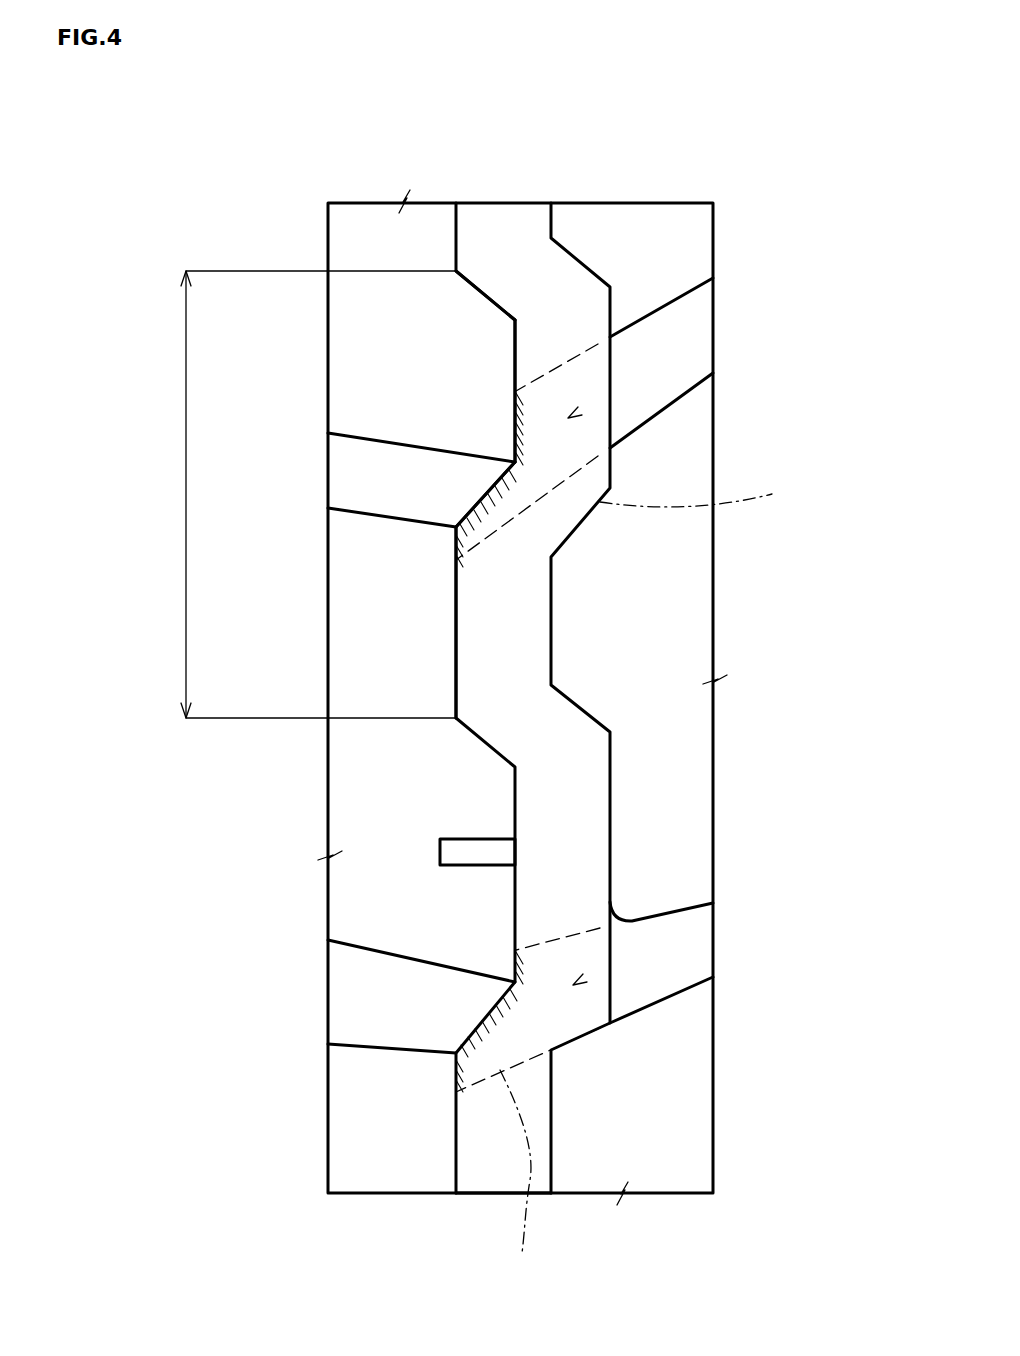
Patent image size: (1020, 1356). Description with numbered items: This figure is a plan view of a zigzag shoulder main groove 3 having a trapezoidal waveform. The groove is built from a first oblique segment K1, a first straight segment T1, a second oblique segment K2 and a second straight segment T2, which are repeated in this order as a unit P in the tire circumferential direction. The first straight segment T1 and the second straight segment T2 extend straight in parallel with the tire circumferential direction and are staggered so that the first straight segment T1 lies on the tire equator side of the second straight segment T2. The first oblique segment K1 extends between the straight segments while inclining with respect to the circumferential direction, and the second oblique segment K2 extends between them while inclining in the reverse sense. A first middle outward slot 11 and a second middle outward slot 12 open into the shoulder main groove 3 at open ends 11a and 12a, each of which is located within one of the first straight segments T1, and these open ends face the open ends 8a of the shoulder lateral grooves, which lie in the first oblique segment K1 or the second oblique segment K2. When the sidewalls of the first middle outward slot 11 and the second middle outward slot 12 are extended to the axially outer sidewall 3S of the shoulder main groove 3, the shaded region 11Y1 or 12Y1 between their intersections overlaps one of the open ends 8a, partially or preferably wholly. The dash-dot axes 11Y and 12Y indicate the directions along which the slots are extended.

The shoulder main groove 3 is at (513, 238).
The axially outer sidewall of the shoulder main groove 3S is at (470, 1160).
The open end of the shoulder lateral groove 8a is at (468, 510).
The first middle outward slot 11 is at (660, 913).
The open end of the first middle outward slot 11a is at (605, 1005).
The axis of first wiring 11Y is at (524, 1176).
The region between intersections of the first middle outward slot sidewalls 11Y1 is at (573, 985).
The second middle outward slot 12 is at (678, 293).
The open end of the second middle outward slot 12a is at (597, 345).
The axis of second wiring 12Y is at (711, 494).
The region between intersections of the second middle outward slot sidewalls 12Y1 is at (568, 418).
The first oblique segment K1 is at (487, 297).
The second oblique segment K2 is at (512, 470).
The first straight segment T1 is at (515, 368).
The second straight segment T2 is at (457, 650).
The unit P is at (315, 494).